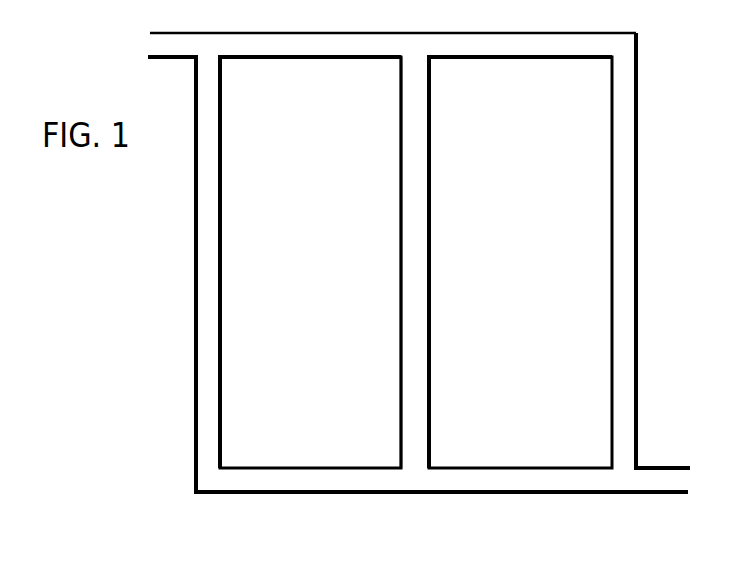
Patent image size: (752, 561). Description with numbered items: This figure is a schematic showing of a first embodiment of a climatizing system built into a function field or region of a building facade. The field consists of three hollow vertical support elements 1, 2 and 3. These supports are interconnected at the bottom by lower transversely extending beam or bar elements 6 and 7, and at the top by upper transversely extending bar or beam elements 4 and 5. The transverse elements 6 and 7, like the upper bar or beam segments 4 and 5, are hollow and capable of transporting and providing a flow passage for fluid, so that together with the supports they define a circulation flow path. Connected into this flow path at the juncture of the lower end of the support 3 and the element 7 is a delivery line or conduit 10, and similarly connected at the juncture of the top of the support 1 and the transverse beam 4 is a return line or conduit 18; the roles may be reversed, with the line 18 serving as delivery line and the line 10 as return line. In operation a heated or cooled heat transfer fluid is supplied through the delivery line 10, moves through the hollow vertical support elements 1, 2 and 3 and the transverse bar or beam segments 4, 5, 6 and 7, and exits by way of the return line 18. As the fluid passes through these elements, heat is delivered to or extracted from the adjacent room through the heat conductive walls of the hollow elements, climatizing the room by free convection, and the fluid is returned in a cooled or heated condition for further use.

The hollow vertical support element 1 is at (203, 237).
The hollow vertical support element 2 is at (413, 237).
The hollow vertical support element 3 is at (622, 235).
The upper transversely extending bar or beam element 4 is at (291, 44).
The upper transversely extending bar or beam element 5 is at (511, 44).
The lower transversely extending beam or bar element 6 is at (303, 482).
The lower transversely extending beam or bar element 7 is at (518, 482).
The delivery line or conduit 10 is at (668, 482).
The return line or conduit 18 is at (166, 44).